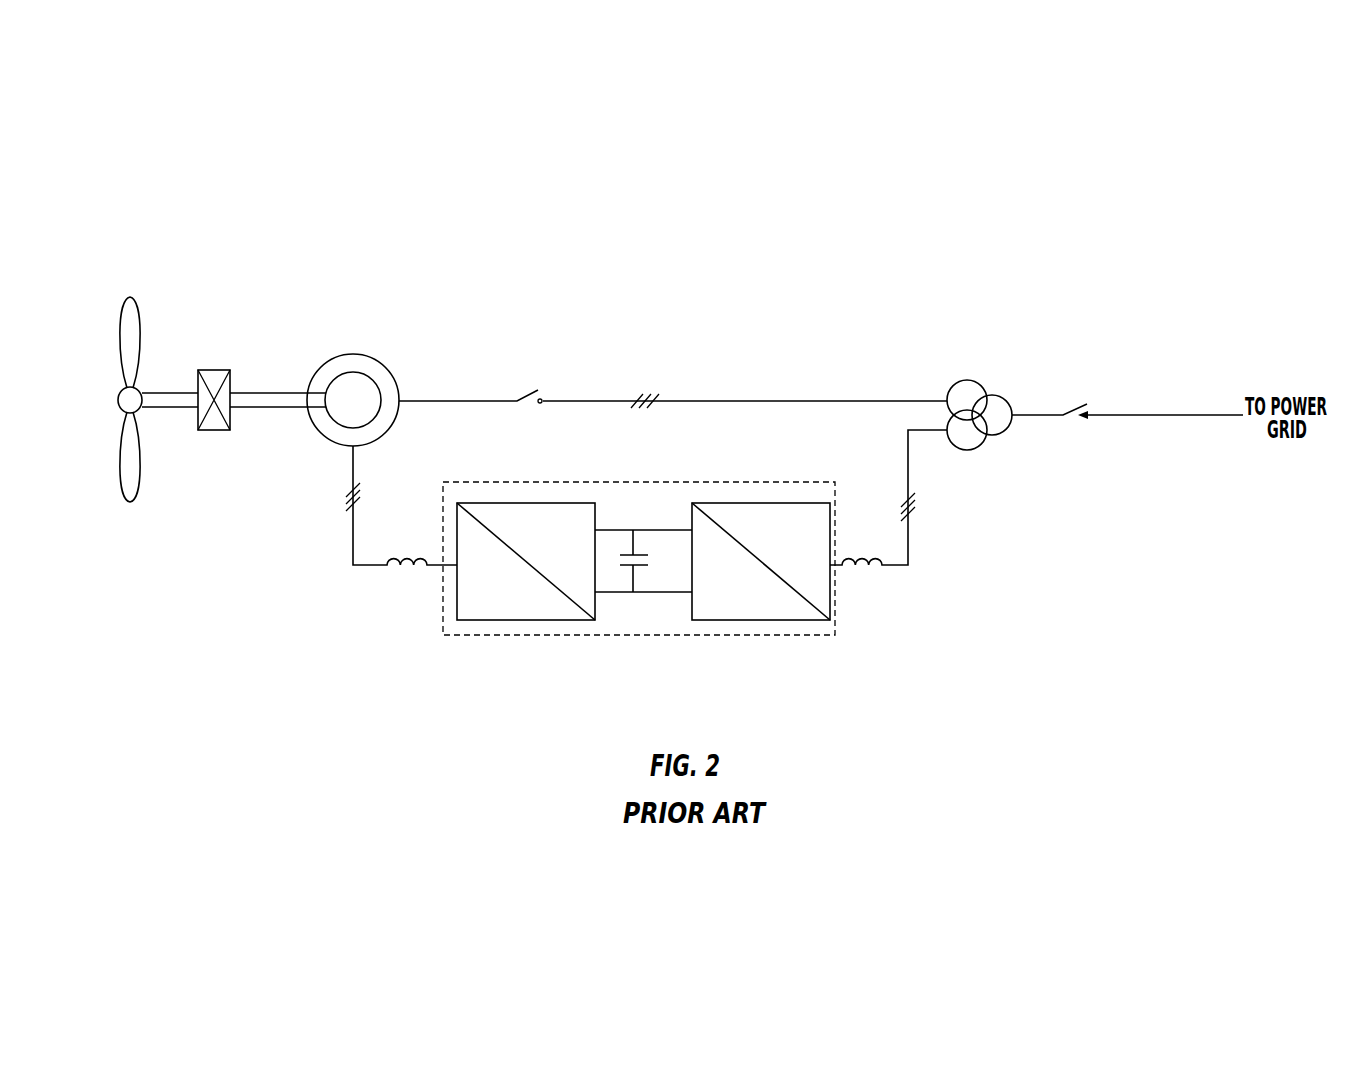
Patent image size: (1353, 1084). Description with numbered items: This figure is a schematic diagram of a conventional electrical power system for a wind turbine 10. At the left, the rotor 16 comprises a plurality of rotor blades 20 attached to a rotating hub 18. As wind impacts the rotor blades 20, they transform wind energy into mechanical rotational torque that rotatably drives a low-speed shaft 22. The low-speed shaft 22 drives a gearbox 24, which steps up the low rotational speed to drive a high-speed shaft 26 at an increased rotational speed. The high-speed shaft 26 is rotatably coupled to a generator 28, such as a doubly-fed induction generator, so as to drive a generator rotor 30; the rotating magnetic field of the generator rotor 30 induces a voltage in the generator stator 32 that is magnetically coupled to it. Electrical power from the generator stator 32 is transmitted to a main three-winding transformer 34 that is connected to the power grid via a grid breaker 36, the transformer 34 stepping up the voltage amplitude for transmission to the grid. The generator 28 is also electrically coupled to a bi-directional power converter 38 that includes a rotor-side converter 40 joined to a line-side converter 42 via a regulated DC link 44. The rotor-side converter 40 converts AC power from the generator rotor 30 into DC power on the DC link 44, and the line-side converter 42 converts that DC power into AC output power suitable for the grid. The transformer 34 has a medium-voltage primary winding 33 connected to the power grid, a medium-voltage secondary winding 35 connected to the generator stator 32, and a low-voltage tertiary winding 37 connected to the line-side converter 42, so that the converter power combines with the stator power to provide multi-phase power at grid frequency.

The wind turbine 10 is at (135, 266).
The rotor 16 is at (114, 418).
The rotating hub 18 is at (120, 403).
The rotor blades 20 is at (133, 330).
The low-speed shaft 22 is at (155, 408).
The gearbox 24 is at (213, 370).
The high-speed shaft 26 is at (245, 408).
The generator 28 is at (351, 399).
The generator rotor 30 is at (375, 380).
The generator stator 32 is at (337, 447).
The primary winding 33 is at (998, 438).
The three-winding transformer 34 is at (950, 408).
The secondary winding 35 is at (947, 392).
The grid breaker 36 is at (1097, 395).
The tertiary winding 37 is at (973, 450).
The bi-directional power converter 38 is at (639, 565).
The rotor-side converter 40 is at (512, 622).
The line-side converter 42 is at (775, 622).
The DC link 44 is at (647, 588).